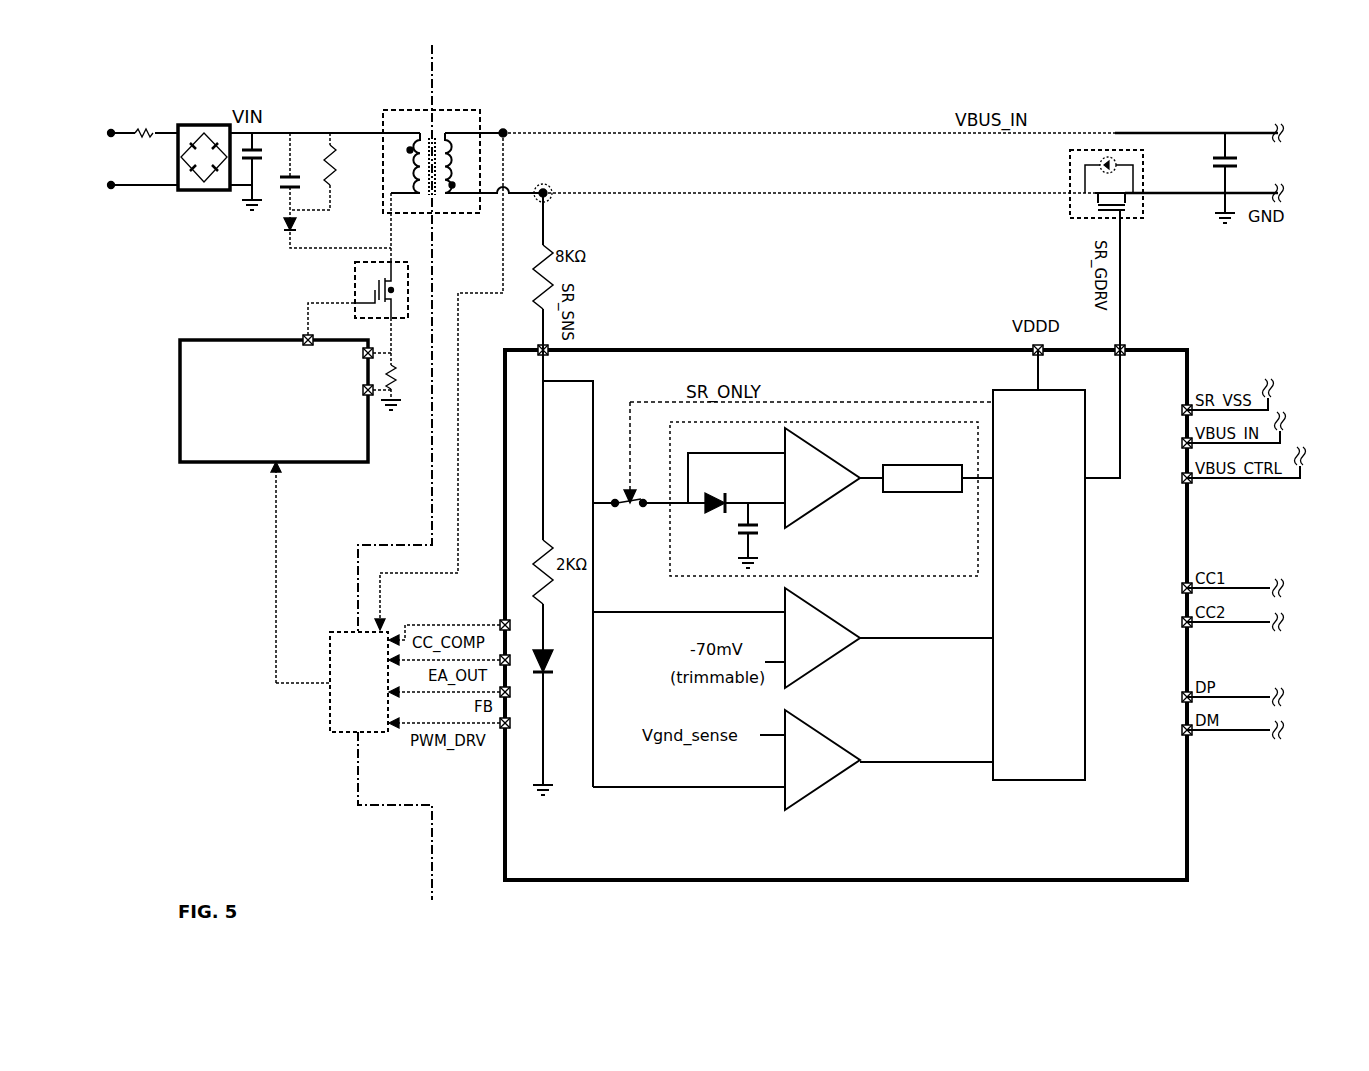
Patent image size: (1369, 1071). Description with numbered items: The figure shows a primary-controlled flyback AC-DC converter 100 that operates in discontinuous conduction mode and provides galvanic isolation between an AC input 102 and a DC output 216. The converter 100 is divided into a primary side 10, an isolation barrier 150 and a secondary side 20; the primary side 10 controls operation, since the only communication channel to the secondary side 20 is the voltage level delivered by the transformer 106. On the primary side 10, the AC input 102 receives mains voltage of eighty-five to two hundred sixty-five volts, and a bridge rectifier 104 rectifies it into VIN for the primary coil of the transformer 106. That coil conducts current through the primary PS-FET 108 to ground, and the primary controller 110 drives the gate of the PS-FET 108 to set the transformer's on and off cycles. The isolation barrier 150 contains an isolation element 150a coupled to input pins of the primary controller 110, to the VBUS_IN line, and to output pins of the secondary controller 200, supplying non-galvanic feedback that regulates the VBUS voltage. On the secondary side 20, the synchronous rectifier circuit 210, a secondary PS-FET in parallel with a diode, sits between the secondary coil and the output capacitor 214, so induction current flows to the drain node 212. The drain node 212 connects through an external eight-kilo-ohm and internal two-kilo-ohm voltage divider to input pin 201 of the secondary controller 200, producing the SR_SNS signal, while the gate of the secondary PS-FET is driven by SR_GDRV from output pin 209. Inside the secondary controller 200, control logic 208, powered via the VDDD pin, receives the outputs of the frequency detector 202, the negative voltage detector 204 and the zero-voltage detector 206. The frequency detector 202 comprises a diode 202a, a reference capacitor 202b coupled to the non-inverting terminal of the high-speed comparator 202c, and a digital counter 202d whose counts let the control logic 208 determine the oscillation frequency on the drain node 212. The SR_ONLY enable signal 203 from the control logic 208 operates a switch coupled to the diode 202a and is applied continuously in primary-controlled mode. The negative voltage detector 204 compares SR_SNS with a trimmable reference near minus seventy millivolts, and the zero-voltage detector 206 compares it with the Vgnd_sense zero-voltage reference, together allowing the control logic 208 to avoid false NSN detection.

The AC-DC converter 100 is at (676, 76).
The AC input 102 is at (100, 155).
The bridge rectifier 104 is at (198, 193).
The transformer 106 is at (470, 216).
The primary PS-FET 108 is at (356, 268).
The primary controller 110 is at (292, 422).
The isolation barrier 150 is at (494, 61).
The isolation element 150a is at (380, 696).
The primary side 10 is at (424, 101).
The secondary side 20 is at (462, 101).
The secondary controller 200 is at (1077, 868).
The input pin 201 is at (538, 346).
The frequency detector 202 is at (970, 572).
The diode 202a is at (710, 526).
The reference capacitor 202b is at (772, 532).
The high-speed comparator 202c is at (836, 487).
The digital counter 202d is at (951, 496).
The SR_ONLY enable signal 203 is at (644, 402).
The negative voltage detector 204 is at (836, 649).
The zero-voltage detector 206 is at (836, 774).
The control logic 208 is at (1056, 626).
The output pin 209 is at (1128, 346).
The synchronous rectifier circuit 210 is at (1082, 222).
The drain node 212 is at (555, 202).
The output capacitor 214 is at (1204, 168).
The DC output 216 is at (1302, 155).